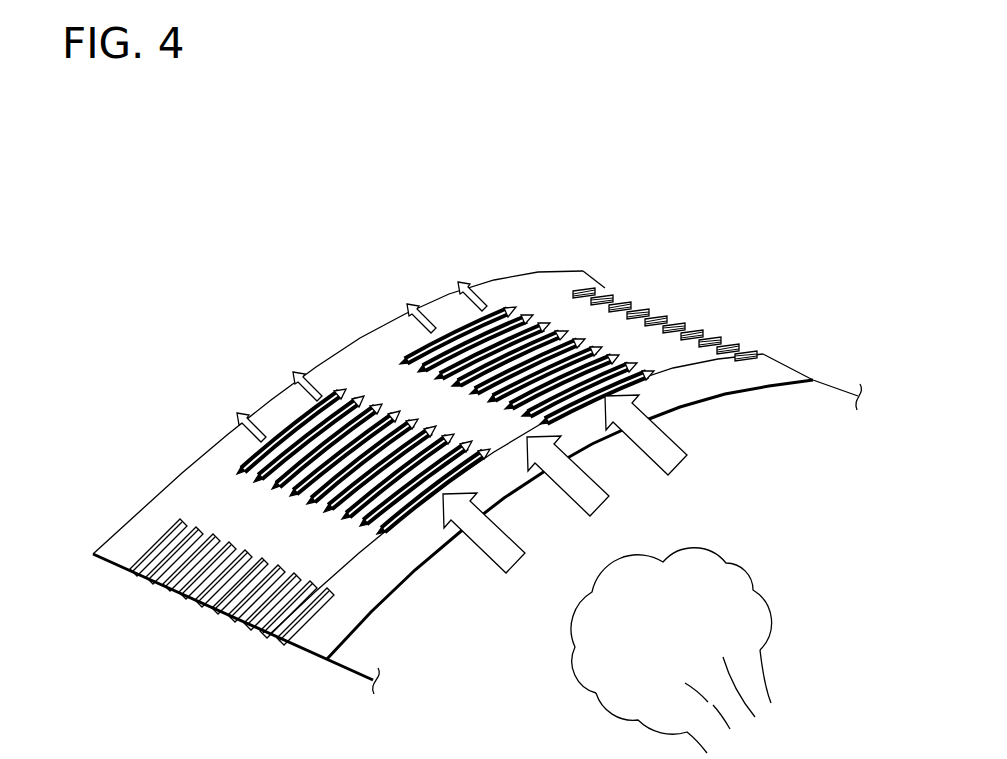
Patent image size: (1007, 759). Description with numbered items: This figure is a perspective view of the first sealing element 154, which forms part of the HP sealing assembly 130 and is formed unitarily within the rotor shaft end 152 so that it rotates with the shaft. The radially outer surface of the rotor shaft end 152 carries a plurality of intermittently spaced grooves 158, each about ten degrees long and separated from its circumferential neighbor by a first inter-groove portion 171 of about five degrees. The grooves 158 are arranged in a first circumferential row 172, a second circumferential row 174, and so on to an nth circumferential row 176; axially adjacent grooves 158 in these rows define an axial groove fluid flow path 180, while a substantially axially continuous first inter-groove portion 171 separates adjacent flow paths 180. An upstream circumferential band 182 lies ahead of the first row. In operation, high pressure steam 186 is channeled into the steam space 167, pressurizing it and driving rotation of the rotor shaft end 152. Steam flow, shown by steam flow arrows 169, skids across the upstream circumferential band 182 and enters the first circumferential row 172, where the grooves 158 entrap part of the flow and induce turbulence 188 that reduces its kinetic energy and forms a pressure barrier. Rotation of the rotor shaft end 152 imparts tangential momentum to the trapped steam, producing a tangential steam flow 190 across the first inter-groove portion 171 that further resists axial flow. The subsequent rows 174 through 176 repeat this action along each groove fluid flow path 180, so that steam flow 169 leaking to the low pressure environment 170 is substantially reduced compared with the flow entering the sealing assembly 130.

The HP sealing assembly 130 is at (242, 198).
The rotor shaft end 152 is at (447, 239).
The first sealing element 154 is at (237, 308).
The grooves 158 is at (397, 532).
The steam space 167 is at (521, 681).
The steam flow arrows 169 is at (292, 379).
The low pressure environment 170 is at (171, 344).
The first inter-groove portion 171 is at (203, 513).
The first circumferential row 172 is at (270, 642).
The second circumferential row 174 is at (251, 639).
The nth circumferential row 176 is at (134, 581).
The axial groove fluid flow path 180 is at (503, 306).
The upstream circumferential band 182 is at (711, 393).
The high pressure steam 186 is at (683, 639).
The turbulence 188 is at (547, 332).
The tangential steam flow 190 is at (382, 536).